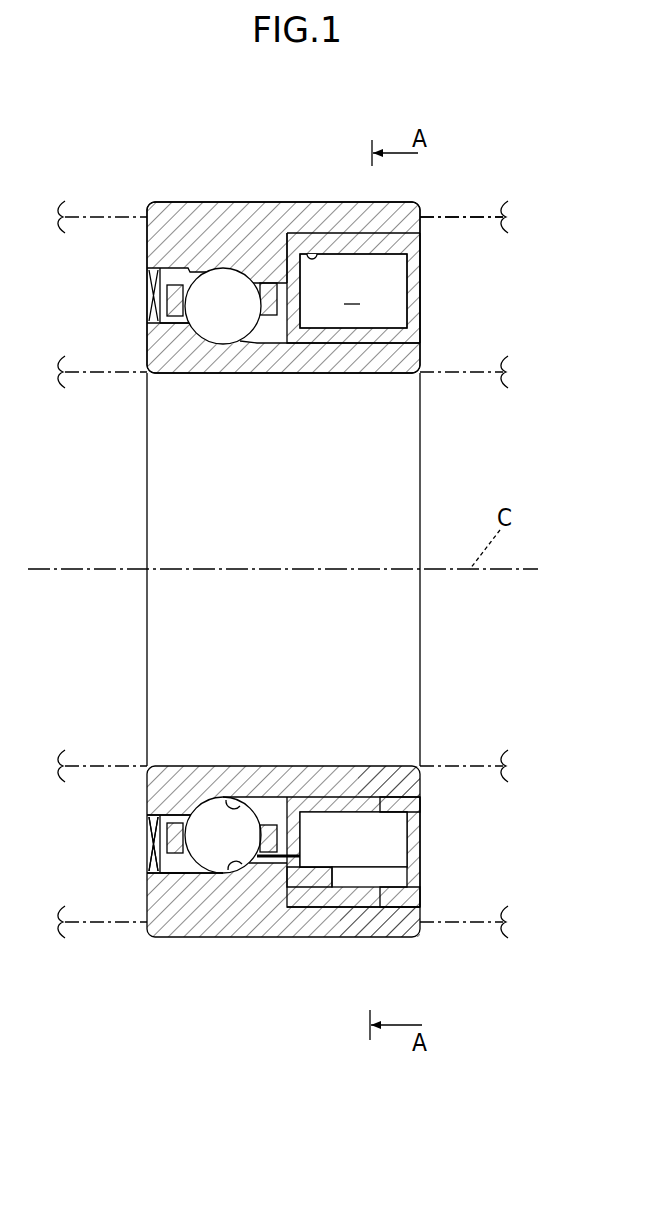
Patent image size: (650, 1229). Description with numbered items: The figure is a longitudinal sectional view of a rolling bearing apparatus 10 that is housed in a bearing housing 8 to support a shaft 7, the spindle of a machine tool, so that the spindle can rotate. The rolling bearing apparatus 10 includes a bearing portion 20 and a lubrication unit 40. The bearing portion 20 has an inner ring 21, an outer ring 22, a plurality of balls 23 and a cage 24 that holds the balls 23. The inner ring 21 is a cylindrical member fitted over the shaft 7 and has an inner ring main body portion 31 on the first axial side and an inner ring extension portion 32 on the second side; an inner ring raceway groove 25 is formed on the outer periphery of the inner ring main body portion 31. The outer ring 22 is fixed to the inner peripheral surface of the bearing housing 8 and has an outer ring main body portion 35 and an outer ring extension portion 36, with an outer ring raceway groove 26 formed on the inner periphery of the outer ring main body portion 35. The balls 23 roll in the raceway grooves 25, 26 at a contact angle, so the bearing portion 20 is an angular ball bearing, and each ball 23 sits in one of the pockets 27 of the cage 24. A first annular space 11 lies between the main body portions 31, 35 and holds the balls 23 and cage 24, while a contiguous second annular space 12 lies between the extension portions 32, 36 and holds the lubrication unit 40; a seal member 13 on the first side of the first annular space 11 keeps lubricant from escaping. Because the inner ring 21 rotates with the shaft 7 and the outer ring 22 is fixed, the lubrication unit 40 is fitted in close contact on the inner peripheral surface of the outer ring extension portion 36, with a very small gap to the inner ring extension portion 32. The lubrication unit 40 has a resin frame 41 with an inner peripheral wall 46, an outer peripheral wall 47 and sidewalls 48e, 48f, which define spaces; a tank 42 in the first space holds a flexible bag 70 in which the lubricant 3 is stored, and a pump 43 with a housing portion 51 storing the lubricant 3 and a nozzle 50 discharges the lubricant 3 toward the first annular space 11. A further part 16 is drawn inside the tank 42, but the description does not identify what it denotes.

The lubricant 3 is at (353, 560).
The shaft 7 is at (477, 370).
The bearing housing 8 is at (476, 219).
The rolling bearing apparatus 10 is at (420, 201).
The first annular space 11 is at (178, 857).
The second annular space 12 is at (421, 870).
The seal member 13 is at (147, 839).
The sensor accommodating space 16 is at (312, 822).
The bearing portion 20 is at (219, 201).
The inner ring 21 is at (192, 352).
The outer ring 22 is at (167, 228).
The ball 23 is at (229, 325).
The cage 24 is at (175, 300).
The inner ring raceway groove 25 is at (238, 797).
The outer ring raceway groove 26 is at (240, 876).
The pocket 27 is at (213, 875).
The inner ring main body portion 31 is at (168, 778).
The inner ring extension portion 32 is at (358, 775).
The outer ring main body portion 35 is at (160, 922).
The outer ring extension portion 36 is at (360, 922).
The lubrication unit 40 is at (326, 232).
The frame 41 is at (418, 823).
The tank 42 is at (395, 309).
The pump 43 is at (316, 870).
The inner peripheral wall 46 is at (389, 805).
The outer peripheral wall 47 is at (397, 895).
The sidewall 48e is at (279, 245).
The sidewall 48f is at (413, 270).
The nozzle 50 is at (262, 866).
The housing portion 51 is at (335, 825).
The bag 70 is at (312, 252).